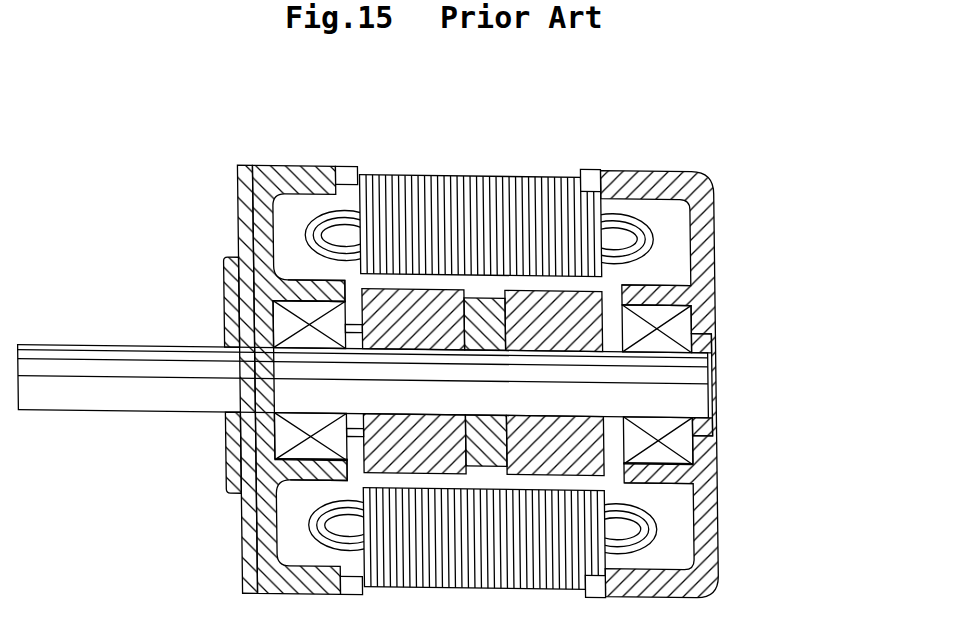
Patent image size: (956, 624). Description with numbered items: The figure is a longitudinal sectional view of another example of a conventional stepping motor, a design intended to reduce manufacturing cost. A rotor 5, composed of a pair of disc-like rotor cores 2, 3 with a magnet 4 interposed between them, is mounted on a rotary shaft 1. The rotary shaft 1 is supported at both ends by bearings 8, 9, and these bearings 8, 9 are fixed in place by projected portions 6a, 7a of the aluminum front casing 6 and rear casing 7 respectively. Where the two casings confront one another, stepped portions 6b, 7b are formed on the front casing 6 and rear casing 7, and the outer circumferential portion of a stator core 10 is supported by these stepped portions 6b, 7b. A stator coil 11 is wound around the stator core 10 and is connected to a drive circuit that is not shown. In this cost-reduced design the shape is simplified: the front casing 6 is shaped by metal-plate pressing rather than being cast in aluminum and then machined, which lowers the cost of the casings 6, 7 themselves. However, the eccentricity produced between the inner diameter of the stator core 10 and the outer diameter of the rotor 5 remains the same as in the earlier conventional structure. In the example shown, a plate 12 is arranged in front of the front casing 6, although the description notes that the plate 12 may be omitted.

The rotary shaft 1 is at (69, 349).
The rotor core 2 is at (315, 301).
The rotor core 3 is at (696, 316).
The magnet 4 is at (494, 300).
The rotor 5 is at (545, 283).
The front casing 6 is at (280, 175).
The projected portion 6a is at (312, 286).
The stepped portion 6b is at (340, 172).
The rear casing 7 is at (708, 180).
The projected portion 7a is at (651, 289).
The stepped portion 7b is at (602, 172).
The bearing 8 is at (233, 341).
The bearing 9 is at (680, 342).
The stator core 10 is at (480, 196).
The stator coil 11 is at (332, 209).
The plate 12 is at (241, 184).